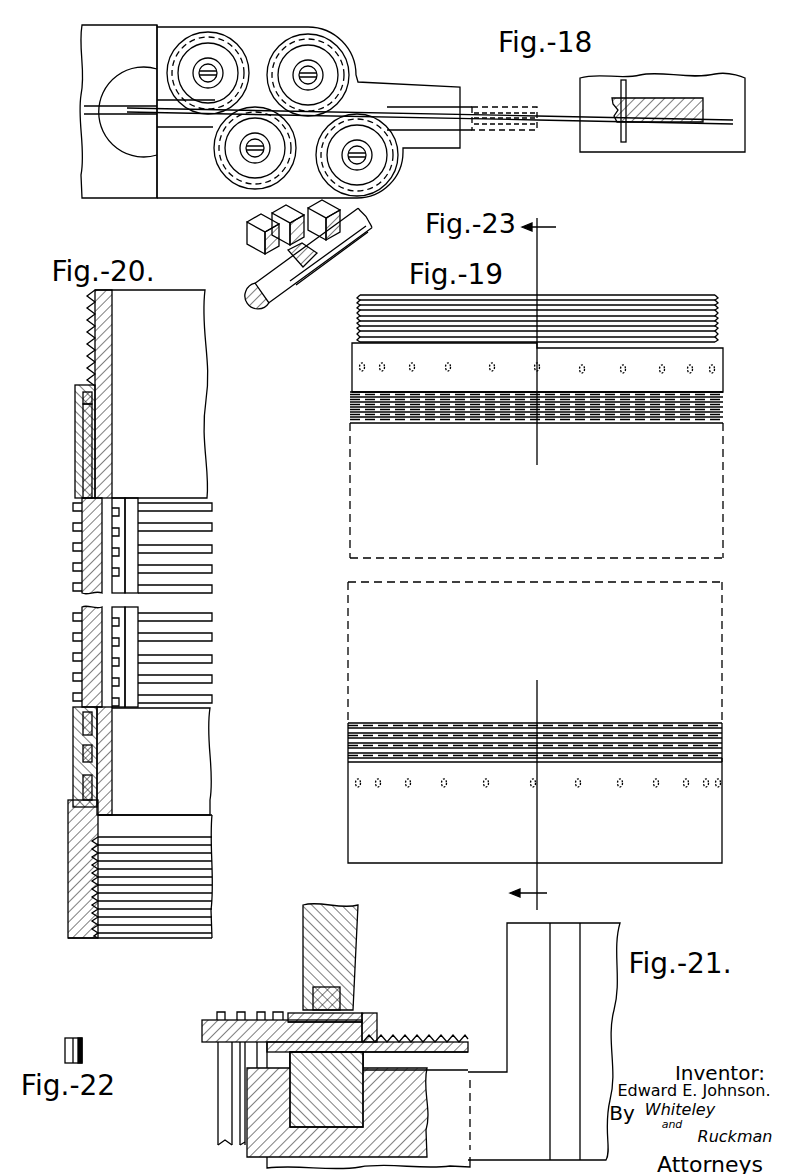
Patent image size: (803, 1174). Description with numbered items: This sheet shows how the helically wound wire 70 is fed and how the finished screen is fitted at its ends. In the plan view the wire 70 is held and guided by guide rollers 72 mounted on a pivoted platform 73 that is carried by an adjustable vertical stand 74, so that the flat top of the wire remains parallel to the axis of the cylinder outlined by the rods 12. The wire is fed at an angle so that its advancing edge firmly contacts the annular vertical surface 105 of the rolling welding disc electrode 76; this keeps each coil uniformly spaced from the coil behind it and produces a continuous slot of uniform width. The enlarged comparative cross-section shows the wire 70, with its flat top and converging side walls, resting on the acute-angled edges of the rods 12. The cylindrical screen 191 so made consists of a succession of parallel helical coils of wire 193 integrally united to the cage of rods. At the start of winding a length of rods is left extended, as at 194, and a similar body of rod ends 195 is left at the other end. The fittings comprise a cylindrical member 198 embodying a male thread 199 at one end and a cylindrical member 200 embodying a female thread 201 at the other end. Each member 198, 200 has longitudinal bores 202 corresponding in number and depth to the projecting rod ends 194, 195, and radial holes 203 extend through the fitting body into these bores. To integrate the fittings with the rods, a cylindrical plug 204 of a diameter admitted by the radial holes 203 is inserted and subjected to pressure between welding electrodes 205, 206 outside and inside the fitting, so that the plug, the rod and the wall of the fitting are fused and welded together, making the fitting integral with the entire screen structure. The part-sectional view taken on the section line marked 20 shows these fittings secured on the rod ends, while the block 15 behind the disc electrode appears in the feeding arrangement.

In FIG. 18, the rod 12 is at (623, 143).
In FIG. 23, the rod 12 is at (301, 279).
In FIG. 20, the rod 12 is at (108, 563).
In FIG. 21, the rod 12 is at (207, 1035).
In FIG. 18, the wall block 15 is at (732, 150).
In FIG. 19, the section line 20 is at (546, 564).
In FIG. 18, the wire 70 is at (142, 114).
In FIG. 23, the wire 70 is at (272, 211).
In FIG. 20, the wire 70 is at (75, 637).
In FIG. 21, the wire 70 is at (240, 1012).
In FIG. 18, the guide rollers 72 is at (220, 158).
In FIG. 18, the pivoted platform 73 is at (406, 140).
In FIG. 18, the adjustable vertical stand 74 is at (117, 132).
In FIG. 18, the welding disc electrode 76 is at (703, 108).
In FIG. 18, the annular vertical surface 105 is at (677, 124).
In FIG. 20, the cylindrical screen 191 is at (213, 617).
In FIG. 19, the cylindrical screen 191 is at (352, 417).
In FIG. 19, the helical coils of wire 193 is at (486, 743).
In FIG. 20, the extended rod ends 194 is at (86, 412).
In FIG. 21, the extended rod ends 194 is at (365, 1028).
In FIG. 20, the rod ends 195 is at (80, 792).
In FIG. 20, the cylindrical member 198 is at (84, 388).
In FIG. 19, the cylindrical member 198 is at (357, 353).
In FIG. 21, the cylindrical member 198 is at (347, 1015).
In FIG. 20, the male thread 199 is at (90, 335).
In FIG. 19, the male thread 199 is at (360, 327).
In FIG. 21, the male thread 199 is at (440, 1036).
In FIG. 20, the cylindrical member 200 is at (80, 852).
In FIG. 19, the cylindrical member 200 is at (357, 821).
In FIG. 20, the female thread 201 is at (195, 889).
In FIG. 20, the longitudinal bores 202 is at (105, 452).
In FIG. 21, the longitudinal bores 202 is at (303, 1020).
In FIG. 20, the radial holes 203 is at (85, 455).
In FIG. 19, the radial holes 203 is at (535, 369).
In FIG. 20, the cylindrical plug 204 is at (80, 765).
In FIG. 21, the cylindrical plug 204 is at (313, 997).
In FIG. 22, the cylindrical plug 204 is at (66, 1050).
In FIG. 21, the welding electrode 205 is at (333, 1020).
In FIG. 21, the welding electrode 206 is at (317, 1094).